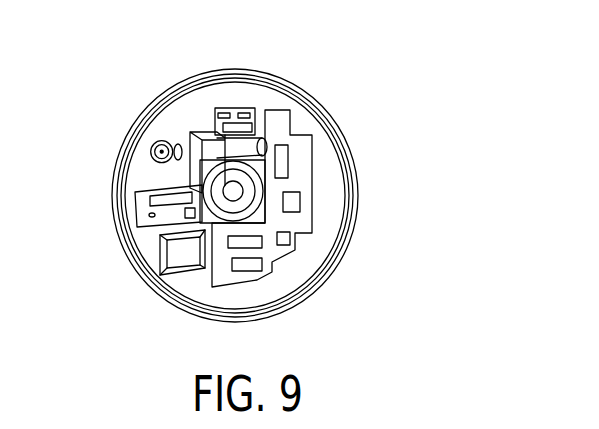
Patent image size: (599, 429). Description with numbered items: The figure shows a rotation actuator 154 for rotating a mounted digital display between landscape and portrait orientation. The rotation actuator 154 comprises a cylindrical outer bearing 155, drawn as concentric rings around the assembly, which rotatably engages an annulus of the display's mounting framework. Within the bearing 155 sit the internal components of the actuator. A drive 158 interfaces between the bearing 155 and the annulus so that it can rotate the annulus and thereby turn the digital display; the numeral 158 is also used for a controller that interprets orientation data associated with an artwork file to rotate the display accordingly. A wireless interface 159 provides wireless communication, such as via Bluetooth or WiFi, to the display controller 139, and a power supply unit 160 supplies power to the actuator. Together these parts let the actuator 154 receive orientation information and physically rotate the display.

The rotation actuator 154 is at (385, 91).
The cylindrical outer bearing 155 is at (357, 157).
The display controller 139 is at (298, 218).
The drive 158 is at (235, 108).
The wireless interface 159 is at (140, 212).
The power supply unit 160 is at (175, 258).